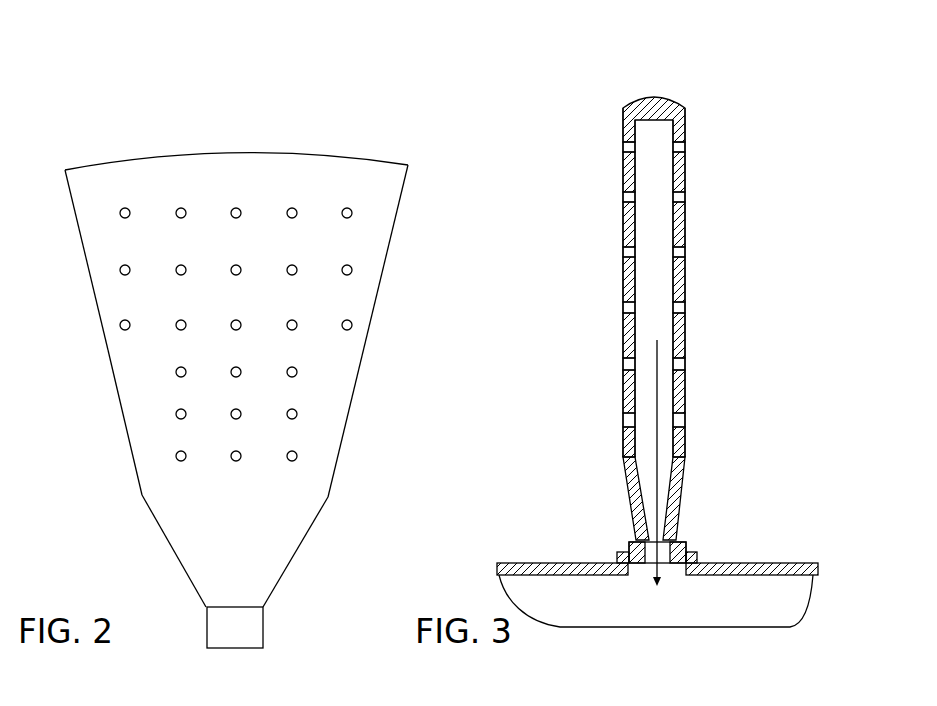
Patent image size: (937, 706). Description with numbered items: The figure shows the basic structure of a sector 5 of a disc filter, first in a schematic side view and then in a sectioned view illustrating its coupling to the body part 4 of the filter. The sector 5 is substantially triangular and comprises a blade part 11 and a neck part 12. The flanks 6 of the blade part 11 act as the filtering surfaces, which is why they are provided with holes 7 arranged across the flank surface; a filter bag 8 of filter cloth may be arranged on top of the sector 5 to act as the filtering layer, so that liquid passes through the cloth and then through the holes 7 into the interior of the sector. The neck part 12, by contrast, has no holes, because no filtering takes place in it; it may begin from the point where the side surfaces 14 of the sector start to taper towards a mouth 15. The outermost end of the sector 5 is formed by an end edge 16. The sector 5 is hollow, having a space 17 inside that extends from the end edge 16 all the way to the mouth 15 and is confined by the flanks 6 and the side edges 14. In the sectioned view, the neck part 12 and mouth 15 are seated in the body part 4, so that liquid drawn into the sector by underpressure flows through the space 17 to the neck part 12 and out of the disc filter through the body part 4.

In FIG. 3, the body part 4 is at (603, 617).
In FIG. 2, the sector 5 is at (197, 88).
In FIG. 3, the sector 5 is at (801, 87).
In FIG. 2, the flanks 6 is at (223, 180).
In FIG. 3, the flanks 6 is at (623, 230).
In FIG. 2, the holes 7 is at (120, 325).
In FIG. 3, the holes 7 is at (686, 254).
In FIG. 2, the filter bag 8 is at (98, 446).
In FIG. 2, the blade part 11 is at (410, 311).
In FIG. 3, the blade part 11 is at (711, 179).
In FIG. 2, the neck part 12 is at (328, 586).
In FIG. 3, the neck part 12 is at (701, 474).
In FIG. 2, the side surfaces 14 is at (88, 272).
In FIG. 2, the mouth 15 is at (288, 639).
In FIG. 3, the mouth 15 is at (713, 536).
In FIG. 2, the end edge 16 is at (133, 156).
In FIG. 3, the end edge 16 is at (646, 70).
In FIG. 3, the space 17 is at (641, 230).